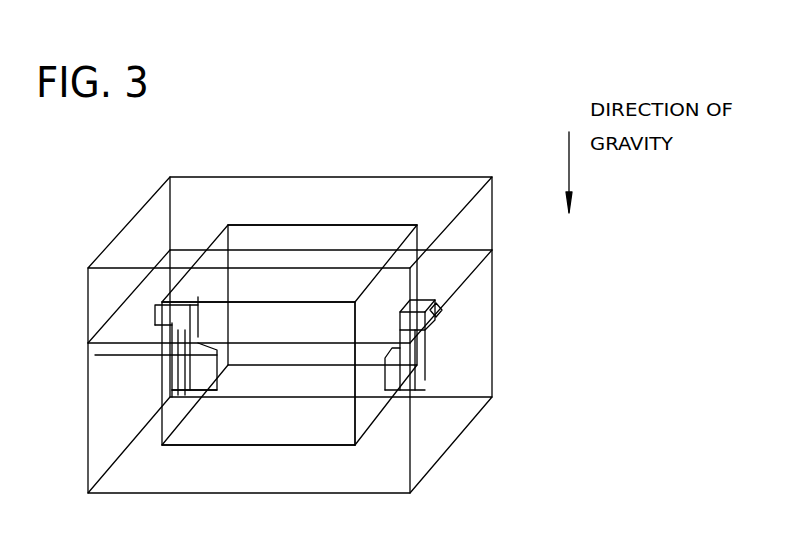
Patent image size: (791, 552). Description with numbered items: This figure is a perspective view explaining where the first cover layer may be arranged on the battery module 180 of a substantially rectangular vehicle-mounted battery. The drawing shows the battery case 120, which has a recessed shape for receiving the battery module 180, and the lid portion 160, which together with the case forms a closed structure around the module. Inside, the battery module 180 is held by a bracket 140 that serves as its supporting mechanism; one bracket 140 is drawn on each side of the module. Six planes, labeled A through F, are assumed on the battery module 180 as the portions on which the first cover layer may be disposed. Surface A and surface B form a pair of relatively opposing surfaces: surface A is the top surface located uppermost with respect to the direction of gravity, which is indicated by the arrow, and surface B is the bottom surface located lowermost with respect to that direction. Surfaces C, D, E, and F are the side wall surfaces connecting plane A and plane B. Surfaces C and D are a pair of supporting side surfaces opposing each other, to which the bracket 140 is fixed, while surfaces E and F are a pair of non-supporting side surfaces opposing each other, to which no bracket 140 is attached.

The battery case 120 is at (443, 457).
The bracket 140 is at (158, 356).
The lid portion 160 is at (427, 177).
The battery module 180 is at (314, 222).
The surface A is at (250, 283).
The surface B is at (332, 446).
The surface C is at (367, 412).
The surface D is at (160, 388).
The surface E is at (263, 427).
The surface F is at (276, 223).